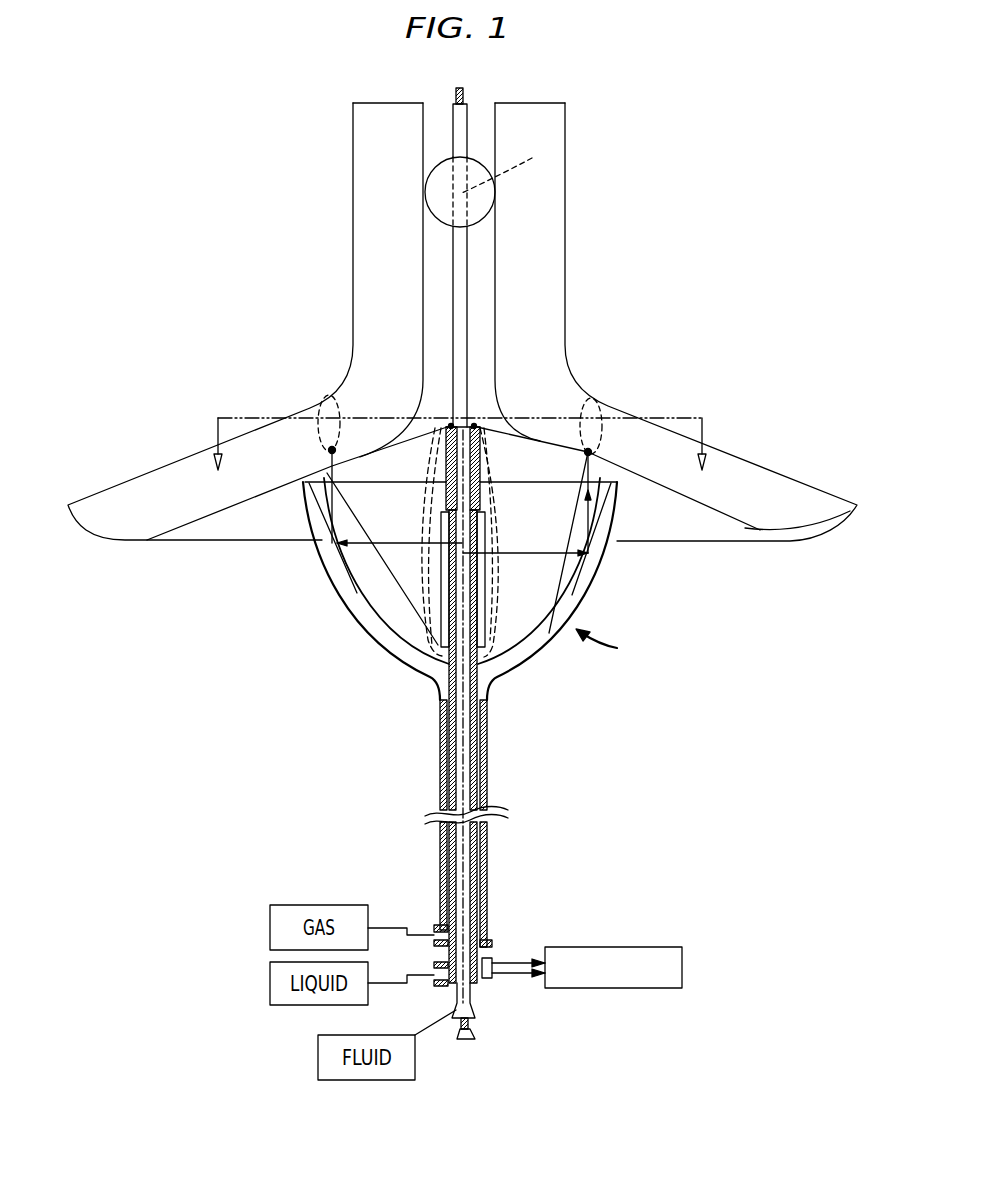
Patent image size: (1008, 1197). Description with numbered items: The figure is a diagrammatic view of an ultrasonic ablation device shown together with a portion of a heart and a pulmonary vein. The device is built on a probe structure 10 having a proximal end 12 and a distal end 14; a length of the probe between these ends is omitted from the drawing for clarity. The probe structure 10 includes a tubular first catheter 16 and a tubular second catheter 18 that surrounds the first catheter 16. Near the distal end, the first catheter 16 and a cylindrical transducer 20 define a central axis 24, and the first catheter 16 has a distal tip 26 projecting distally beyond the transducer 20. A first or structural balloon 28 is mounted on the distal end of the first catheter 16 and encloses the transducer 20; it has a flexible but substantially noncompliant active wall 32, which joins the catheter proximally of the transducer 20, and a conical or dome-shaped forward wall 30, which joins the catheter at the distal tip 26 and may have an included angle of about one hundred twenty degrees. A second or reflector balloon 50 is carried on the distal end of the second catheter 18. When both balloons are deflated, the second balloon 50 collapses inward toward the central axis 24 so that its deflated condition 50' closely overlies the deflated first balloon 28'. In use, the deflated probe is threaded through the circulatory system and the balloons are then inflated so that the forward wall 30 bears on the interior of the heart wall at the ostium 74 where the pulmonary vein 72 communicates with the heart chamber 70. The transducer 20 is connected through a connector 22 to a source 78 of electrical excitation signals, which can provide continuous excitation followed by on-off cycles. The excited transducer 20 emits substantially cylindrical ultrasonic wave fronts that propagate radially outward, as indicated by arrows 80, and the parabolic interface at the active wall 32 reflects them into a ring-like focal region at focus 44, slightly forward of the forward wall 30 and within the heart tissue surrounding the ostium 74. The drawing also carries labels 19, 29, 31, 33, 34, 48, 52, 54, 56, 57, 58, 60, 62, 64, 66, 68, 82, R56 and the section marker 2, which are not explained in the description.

The probe structure 10 is at (425, 829).
The proximal end 12 is at (500, 871).
The distal end 14 is at (419, 699).
The first catheter 16 is at (481, 741).
The second catheter 18 is at (489, 716).
The central bore 19 is at (462, 781).
The cylindrical transducer 20 is at (447, 630).
The connector 22 is at (486, 980).
The central axis 24 is at (456, 510).
The distal tip 26 is at (446, 463).
The first balloon 28 is at (463, 591).
The deflated first balloon 28' is at (394, 537).
The inner cup wall 29 is at (545, 570).
The forward wall 30 is at (512, 438).
The cup bottom 31 is at (569, 689).
The active wall 32 is at (567, 600).
The flanges 33 is at (482, 797).
The tube tip 34 is at (468, 425).
The focus 44 is at (590, 451).
The liquid inlet 48 is at (434, 975).
The second balloon 50 is at (609, 643).
The deflated second balloon 50' is at (396, 542).
The support rod 52 is at (357, 562).
The support rod 54 is at (303, 484).
The gas passage 56 is at (440, 882).
The shoulder 57 is at (496, 690).
The gas inlet 58 is at (433, 926).
The capillary tube 60 is at (452, 303).
The ball 62 is at (437, 194).
The ball passage 64 is at (506, 165).
The nozzle 66 is at (455, 1012).
The fluid tube end 68 is at (466, 94).
The heart chamber 70 is at (196, 568).
The pulmonary vein 72 is at (481, 137).
The ostium 74 is at (316, 391).
The source 78 is at (649, 947).
The arrows 80 is at (360, 542).
The pivot 82 is at (315, 404).
The fillet radius R56 is at (440, 743).
The section line 2 is at (460, 458).